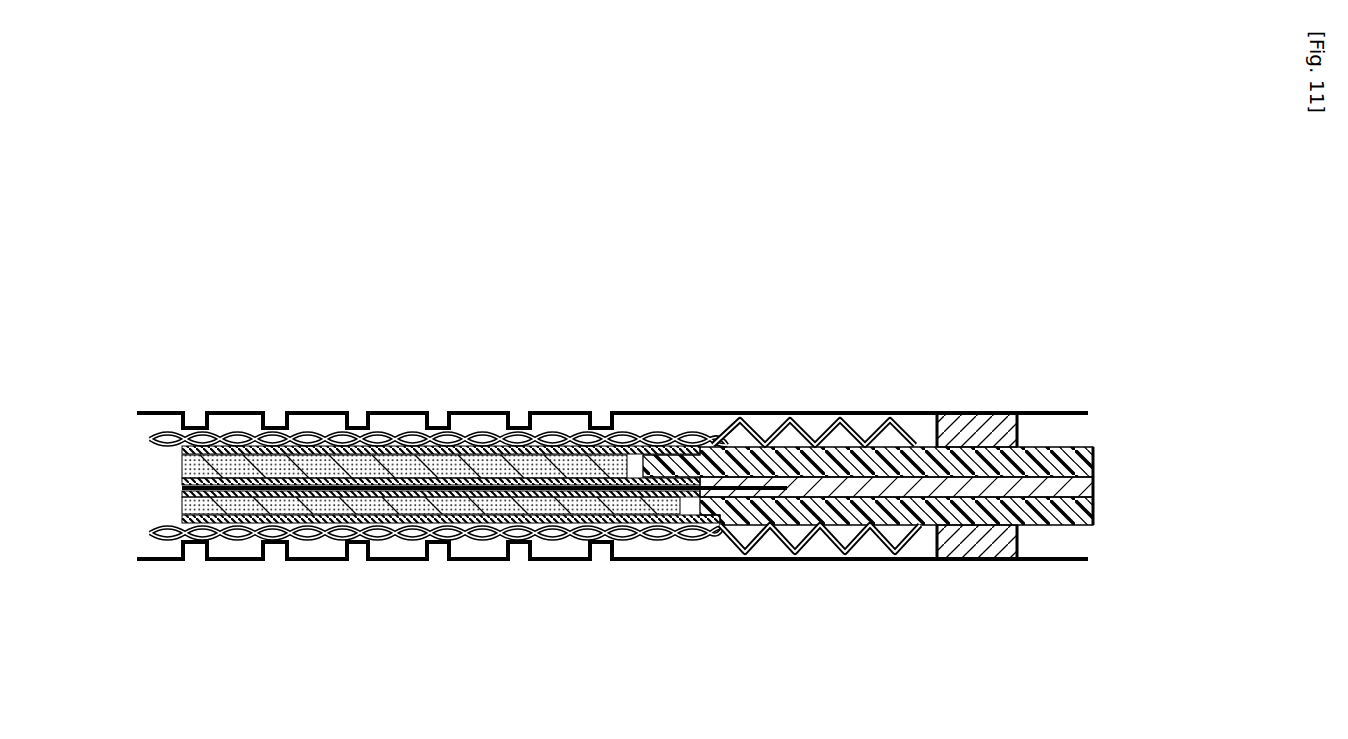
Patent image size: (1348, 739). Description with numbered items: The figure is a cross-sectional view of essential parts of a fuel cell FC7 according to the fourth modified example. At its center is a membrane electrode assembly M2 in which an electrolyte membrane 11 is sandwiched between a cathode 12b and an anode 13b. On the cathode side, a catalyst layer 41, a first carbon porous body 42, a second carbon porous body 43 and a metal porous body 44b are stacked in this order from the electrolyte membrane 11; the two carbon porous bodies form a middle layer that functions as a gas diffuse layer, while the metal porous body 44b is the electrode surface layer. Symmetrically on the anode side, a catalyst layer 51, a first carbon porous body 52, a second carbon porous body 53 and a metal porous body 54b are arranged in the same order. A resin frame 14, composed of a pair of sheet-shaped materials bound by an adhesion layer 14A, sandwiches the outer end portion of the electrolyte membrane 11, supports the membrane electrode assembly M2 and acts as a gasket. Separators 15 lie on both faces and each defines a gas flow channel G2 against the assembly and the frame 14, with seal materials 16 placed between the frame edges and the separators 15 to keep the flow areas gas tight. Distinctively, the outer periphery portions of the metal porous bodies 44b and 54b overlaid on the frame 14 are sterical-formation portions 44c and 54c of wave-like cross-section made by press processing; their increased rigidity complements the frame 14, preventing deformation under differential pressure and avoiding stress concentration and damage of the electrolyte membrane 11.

The fuel cell FC7 is at (975, 339).
The membrane electrode assembly M2 is at (118, 433).
The electrolyte membrane 11 is at (700, 483).
The cathode 12b is at (193, 330).
The anode 13b is at (185, 645).
The frame 14 is at (913, 456).
The adhesion layer 14A is at (1093, 485).
The separator 15 is at (815, 412).
The seal material 16 is at (1010, 433).
The catalyst layer 41 is at (247, 450).
The first carbon porous body 42 is at (318, 468).
The second carbon porous body 43 is at (390, 478).
The metal porous body 44b is at (407, 440).
The sterical-formation portion 44c is at (757, 432).
The catalyst layer 51 is at (228, 518).
The first carbon porous body 52 is at (280, 500).
The second carbon porous body 53 is at (335, 490).
The metal porous body 54b is at (403, 533).
The sterical-formation portion 54c is at (763, 540).
The gas flow channel G2 is at (566, 424).